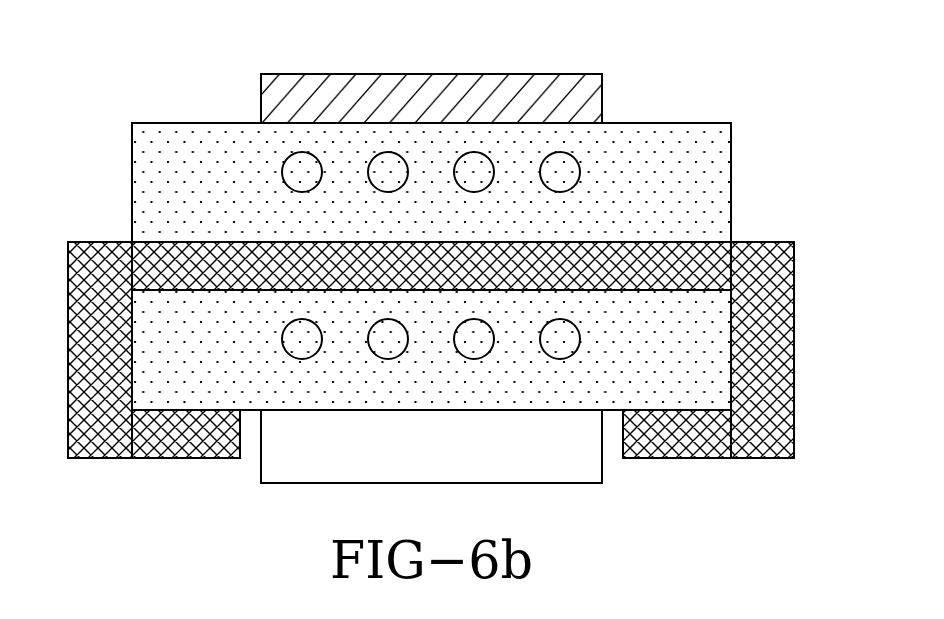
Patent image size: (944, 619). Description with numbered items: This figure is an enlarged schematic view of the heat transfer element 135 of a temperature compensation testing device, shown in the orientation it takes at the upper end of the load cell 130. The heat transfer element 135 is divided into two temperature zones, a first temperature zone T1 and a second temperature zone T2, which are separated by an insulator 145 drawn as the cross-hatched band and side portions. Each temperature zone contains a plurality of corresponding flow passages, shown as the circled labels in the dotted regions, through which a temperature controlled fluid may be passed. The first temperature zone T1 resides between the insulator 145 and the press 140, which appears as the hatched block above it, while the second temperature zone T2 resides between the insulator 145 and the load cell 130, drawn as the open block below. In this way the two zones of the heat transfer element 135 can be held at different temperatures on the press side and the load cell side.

The load cell 130 is at (547, 465).
The heat transfer element 135 is at (682, 78).
The press 140 is at (302, 92).
The insulator 145 is at (764, 278).
The first temperature zone T1 is at (178, 177).
The second temperature zone T2 is at (202, 362).